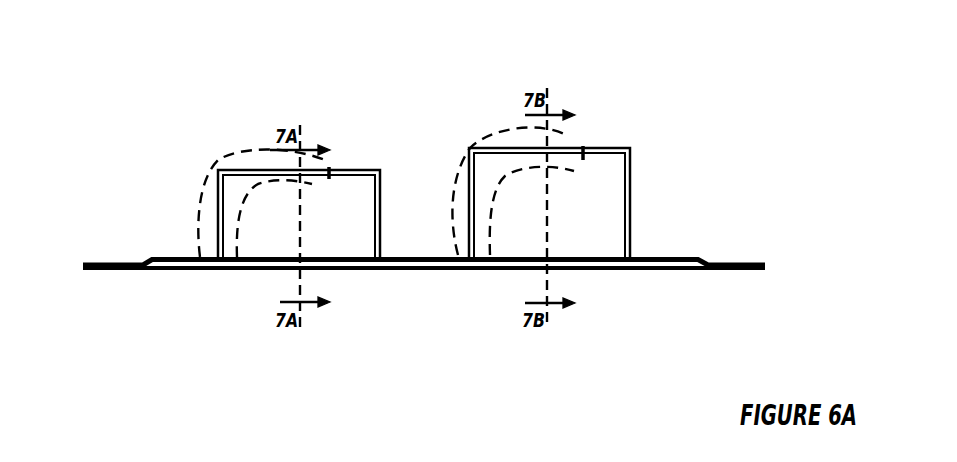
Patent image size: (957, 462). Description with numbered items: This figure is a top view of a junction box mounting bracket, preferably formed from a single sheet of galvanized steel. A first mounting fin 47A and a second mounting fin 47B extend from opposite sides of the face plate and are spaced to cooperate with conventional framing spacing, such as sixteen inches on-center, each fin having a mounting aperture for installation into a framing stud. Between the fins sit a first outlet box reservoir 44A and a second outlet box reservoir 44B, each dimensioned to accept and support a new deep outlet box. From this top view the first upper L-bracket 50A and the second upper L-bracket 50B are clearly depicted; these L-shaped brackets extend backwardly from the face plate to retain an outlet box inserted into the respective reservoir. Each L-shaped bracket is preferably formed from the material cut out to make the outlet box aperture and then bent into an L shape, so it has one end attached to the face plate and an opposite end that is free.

The first mounting fin 47A is at (110, 257).
The second mounting fin 47B is at (752, 247).
The first outlet box reservoir 44A is at (368, 145).
The second outlet box reservoir 44B is at (645, 130).
The first upper L-bracket 50A is at (205, 185).
The second upper L-bracket 50B is at (460, 147).